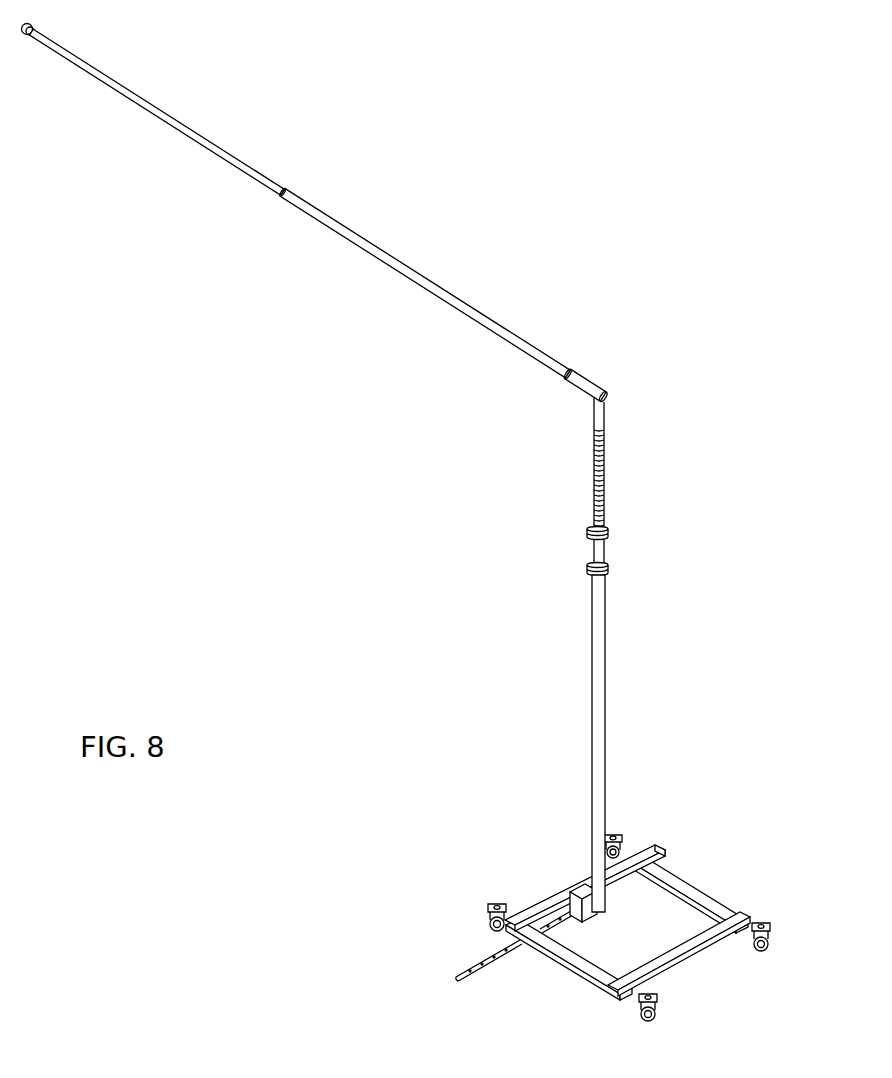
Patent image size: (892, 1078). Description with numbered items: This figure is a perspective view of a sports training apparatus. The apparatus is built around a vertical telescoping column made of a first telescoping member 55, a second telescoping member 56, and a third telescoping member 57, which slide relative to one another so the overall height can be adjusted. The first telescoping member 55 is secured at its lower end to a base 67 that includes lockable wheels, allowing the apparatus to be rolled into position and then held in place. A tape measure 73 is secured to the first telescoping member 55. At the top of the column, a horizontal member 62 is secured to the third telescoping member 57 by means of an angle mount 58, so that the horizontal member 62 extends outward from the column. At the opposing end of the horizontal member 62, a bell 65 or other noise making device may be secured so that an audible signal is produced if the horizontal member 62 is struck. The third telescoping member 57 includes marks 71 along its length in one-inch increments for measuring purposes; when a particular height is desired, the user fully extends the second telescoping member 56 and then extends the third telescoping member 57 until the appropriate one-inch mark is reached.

The first telescoping member 55 is at (598, 708).
The second telescoping member 56 is at (607, 552).
The third telescoping member 57 is at (597, 424).
The angle mount 58 is at (585, 372).
The horizontal member 62 is at (349, 236).
The bell 65 is at (25, 38).
The base 67 is at (697, 902).
The marks 71 is at (607, 483).
The tape measure 73 is at (583, 880).